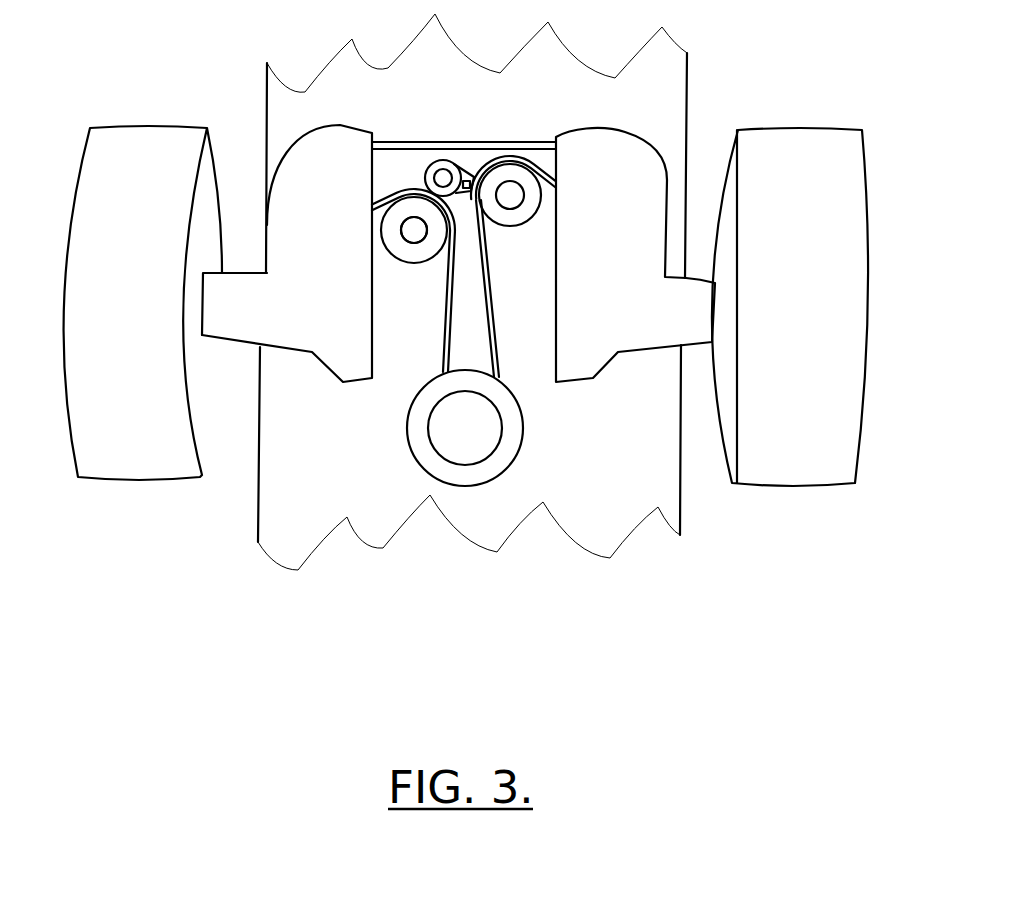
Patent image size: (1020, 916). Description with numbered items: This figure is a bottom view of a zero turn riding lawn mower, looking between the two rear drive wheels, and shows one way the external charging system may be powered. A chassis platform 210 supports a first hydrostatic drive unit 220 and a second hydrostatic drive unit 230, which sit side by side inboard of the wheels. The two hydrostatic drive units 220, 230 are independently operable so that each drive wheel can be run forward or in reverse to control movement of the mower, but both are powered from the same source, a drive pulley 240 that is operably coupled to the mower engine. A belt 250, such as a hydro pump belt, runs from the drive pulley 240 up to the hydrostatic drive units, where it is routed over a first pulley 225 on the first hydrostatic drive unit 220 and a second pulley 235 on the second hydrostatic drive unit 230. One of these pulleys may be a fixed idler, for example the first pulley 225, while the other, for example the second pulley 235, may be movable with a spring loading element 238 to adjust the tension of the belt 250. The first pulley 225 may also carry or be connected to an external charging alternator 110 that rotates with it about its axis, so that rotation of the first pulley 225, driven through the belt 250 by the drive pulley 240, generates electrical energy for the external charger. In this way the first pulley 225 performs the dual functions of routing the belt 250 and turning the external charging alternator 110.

The external charging alternator 110 is at (425, 232).
The chassis platform 210 is at (285, 90).
The first hydrostatic drive unit 220 is at (295, 160).
The first pulley 225 is at (408, 212).
The second hydrostatic drive unit 230 is at (635, 172).
The second pulley 235 is at (510, 178).
The spring loading element 238 is at (437, 170).
The drive pulley 240 is at (460, 443).
The belt 250 is at (490, 343).